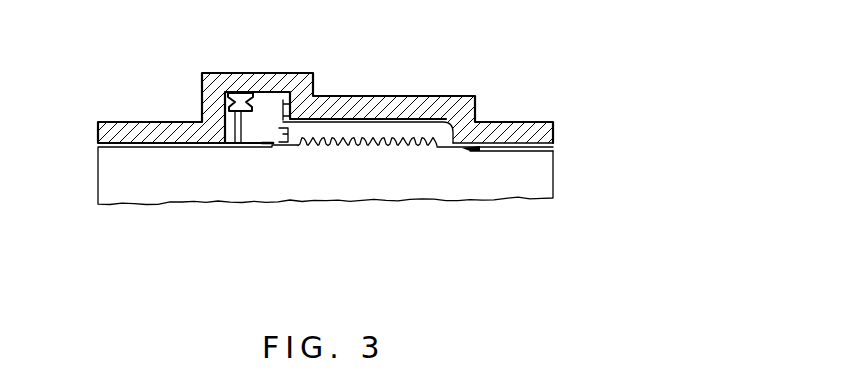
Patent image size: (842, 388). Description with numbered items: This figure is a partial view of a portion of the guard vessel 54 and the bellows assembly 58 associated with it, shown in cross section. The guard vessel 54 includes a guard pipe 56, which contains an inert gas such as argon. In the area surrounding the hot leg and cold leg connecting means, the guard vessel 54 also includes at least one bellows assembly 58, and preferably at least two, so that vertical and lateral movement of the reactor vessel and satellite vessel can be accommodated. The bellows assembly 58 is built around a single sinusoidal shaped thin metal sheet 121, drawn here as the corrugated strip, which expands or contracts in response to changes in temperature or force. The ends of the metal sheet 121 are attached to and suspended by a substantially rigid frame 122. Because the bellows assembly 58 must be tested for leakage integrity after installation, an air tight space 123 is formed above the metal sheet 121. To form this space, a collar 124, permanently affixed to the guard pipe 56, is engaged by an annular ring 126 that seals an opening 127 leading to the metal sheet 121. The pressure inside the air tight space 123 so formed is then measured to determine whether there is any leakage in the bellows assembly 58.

The guard vessel 54 is at (425, 92).
The guard pipe 56 is at (392, 107).
The bellows assembly 58 is at (350, 132).
The sinusoidal shaped thin metal sheet 121 is at (333, 144).
The rigid frame 122 is at (443, 148).
The air tight space 123 is at (293, 142).
The collar 124 is at (448, 120).
The annular ring 126 is at (258, 93).
The opening 127 is at (278, 123).